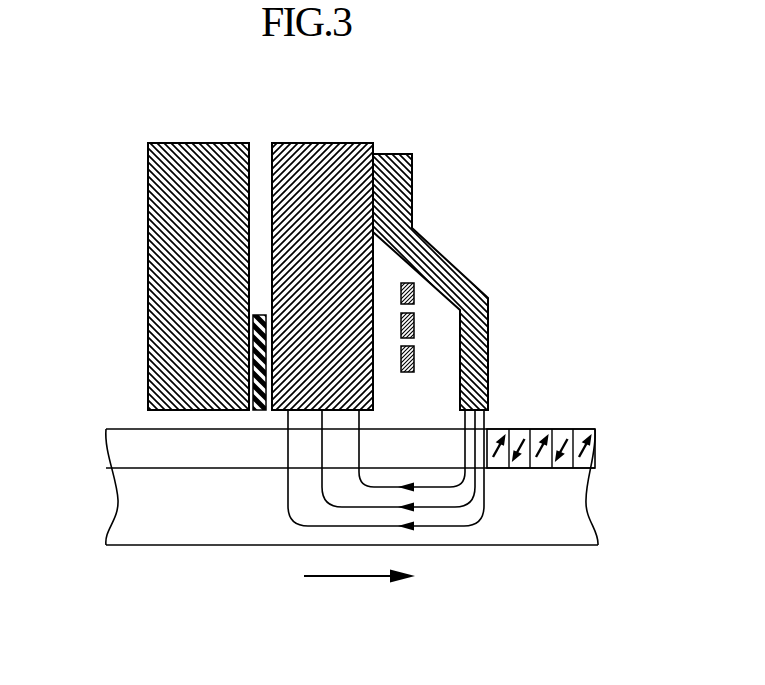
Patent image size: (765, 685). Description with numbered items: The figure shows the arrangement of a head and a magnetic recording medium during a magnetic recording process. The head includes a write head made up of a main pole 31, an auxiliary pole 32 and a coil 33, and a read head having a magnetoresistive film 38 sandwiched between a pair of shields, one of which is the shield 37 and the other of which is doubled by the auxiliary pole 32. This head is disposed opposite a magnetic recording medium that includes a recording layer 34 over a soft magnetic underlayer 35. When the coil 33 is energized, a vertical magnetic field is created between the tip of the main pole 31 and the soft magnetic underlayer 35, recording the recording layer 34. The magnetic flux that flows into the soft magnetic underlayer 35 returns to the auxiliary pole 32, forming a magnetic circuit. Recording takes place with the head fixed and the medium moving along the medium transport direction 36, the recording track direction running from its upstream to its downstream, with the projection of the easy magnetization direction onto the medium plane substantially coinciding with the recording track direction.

The main pole 31 is at (477, 368).
The auxiliary pole 32 is at (340, 172).
The coil 33 is at (414, 313).
The recording layer 34 is at (130, 446).
The soft magnetic underlayer 35 is at (133, 515).
The medium transport direction 36 is at (350, 577).
The shield 37 is at (190, 177).
The magnetoresistive film 38 is at (259, 315).